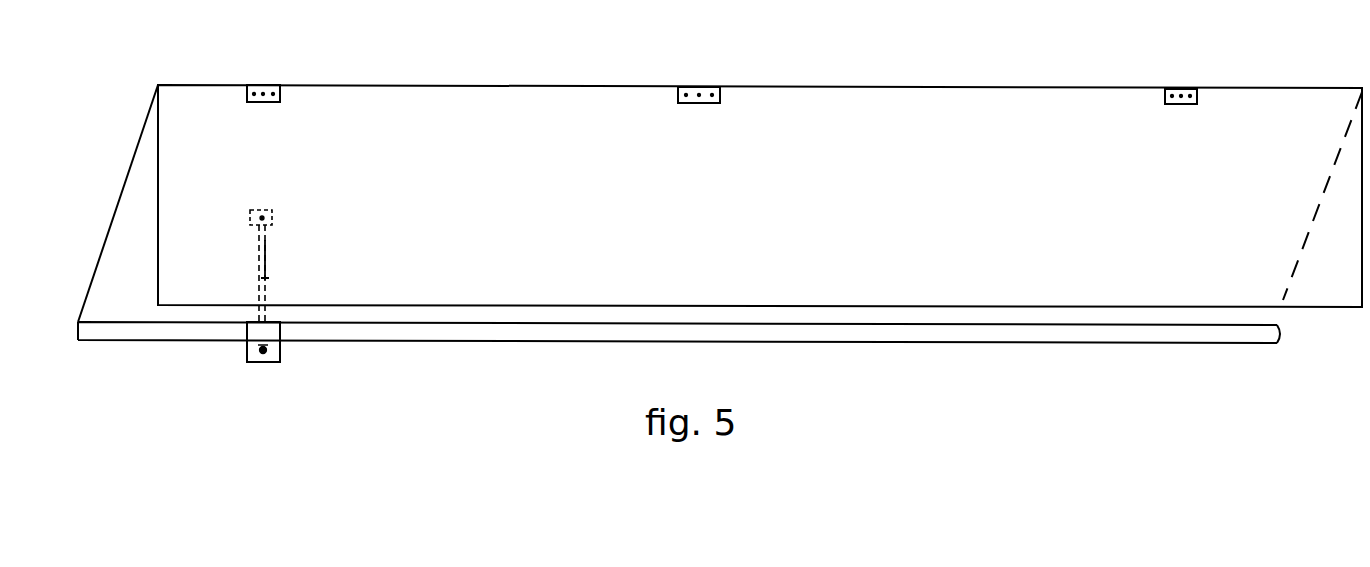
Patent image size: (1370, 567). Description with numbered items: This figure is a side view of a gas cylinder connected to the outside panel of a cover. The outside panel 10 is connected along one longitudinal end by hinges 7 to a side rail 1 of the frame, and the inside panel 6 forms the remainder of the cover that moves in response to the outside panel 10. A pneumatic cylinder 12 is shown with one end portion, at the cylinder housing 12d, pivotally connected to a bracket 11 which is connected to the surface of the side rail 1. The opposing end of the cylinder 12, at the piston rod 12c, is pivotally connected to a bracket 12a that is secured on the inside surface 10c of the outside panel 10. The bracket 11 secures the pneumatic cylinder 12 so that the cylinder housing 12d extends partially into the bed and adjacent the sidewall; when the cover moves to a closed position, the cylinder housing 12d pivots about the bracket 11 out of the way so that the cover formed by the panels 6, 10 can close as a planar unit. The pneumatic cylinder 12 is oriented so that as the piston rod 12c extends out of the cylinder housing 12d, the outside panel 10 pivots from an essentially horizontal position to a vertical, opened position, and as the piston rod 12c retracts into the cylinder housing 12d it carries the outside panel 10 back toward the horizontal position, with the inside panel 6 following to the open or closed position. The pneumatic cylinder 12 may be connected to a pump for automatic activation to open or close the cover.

The side rail 1 is at (106, 332).
The inside panel 6 is at (1340, 298).
The hinges 7 is at (265, 84).
The outside panel 10 is at (120, 210).
The inside surface 10c is at (1225, 315).
The bracket 11 is at (283, 358).
The pneumatic cylinder 12 is at (265, 305).
The bracket 12a is at (272, 213).
The piston rod 12c is at (266, 250).
The cylinder housing 12d is at (250, 330).